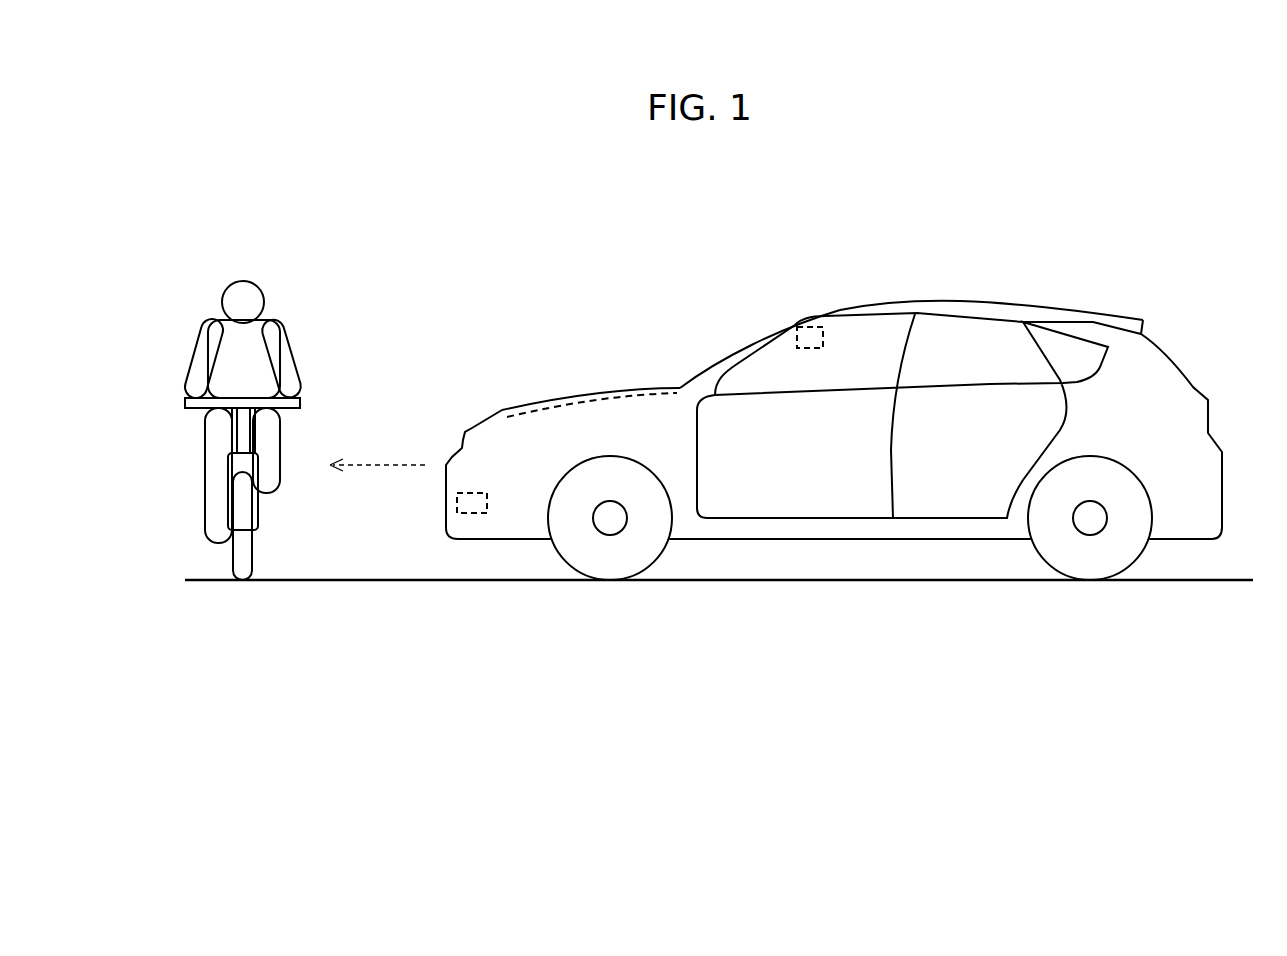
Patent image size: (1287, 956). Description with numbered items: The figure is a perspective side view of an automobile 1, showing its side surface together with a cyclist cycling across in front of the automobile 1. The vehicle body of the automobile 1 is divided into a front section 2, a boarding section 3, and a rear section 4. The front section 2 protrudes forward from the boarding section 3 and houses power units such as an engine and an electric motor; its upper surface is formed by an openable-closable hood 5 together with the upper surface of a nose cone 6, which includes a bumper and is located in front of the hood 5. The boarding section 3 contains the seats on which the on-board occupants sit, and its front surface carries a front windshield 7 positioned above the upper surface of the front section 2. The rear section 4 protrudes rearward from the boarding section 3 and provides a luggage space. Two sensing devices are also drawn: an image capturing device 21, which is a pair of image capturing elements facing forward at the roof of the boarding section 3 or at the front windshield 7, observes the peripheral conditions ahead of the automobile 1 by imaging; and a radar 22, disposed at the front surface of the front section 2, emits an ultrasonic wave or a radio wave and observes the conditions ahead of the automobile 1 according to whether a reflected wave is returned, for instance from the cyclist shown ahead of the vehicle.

The automobile 1 is at (513, 257).
The front section 2 is at (650, 423).
The boarding section 3 is at (952, 338).
The rear section 4 is at (1165, 362).
The hood 5 is at (538, 400).
The nose cone 6 is at (463, 433).
The front windshield 7 is at (735, 350).
The image capturing device 21 is at (805, 322).
The radar 22 is at (475, 523).